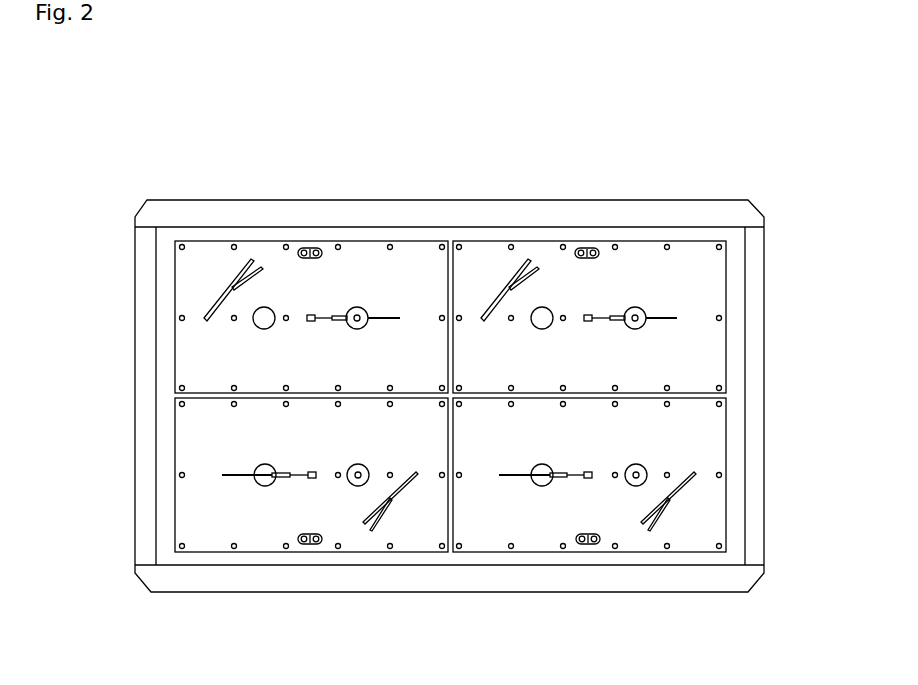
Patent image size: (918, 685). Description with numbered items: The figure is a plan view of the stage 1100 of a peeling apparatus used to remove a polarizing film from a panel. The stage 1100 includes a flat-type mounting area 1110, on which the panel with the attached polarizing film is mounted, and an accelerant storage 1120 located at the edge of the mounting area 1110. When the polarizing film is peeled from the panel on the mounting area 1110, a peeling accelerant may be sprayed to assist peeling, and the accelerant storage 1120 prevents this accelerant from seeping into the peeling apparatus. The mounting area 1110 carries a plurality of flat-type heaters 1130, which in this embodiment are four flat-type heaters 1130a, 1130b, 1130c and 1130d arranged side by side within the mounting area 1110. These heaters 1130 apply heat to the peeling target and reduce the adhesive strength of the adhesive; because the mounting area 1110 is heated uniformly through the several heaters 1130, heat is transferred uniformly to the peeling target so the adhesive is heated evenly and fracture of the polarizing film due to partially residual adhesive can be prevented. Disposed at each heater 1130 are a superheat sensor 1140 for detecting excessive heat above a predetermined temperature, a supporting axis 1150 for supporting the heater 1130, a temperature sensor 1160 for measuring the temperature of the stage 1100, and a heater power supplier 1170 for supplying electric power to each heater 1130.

The stage 1100 is at (447, 72).
The mounting area 1110 is at (313, 232).
The accelerant storage 1120 is at (257, 215).
The flat-type heaters 1130 is at (737, 119).
The flat-type heater 1130a is at (417, 257).
The flat-type heater 1130b is at (416, 425).
The flat-type heater 1130c is at (607, 275).
The flat-type heater 1130d is at (562, 433).
The superheat sensor 1140 is at (205, 319).
The supporting axis 1150 is at (353, 324).
The temperature sensor 1160 is at (312, 473).
The heater power supplier 1170 is at (310, 545).